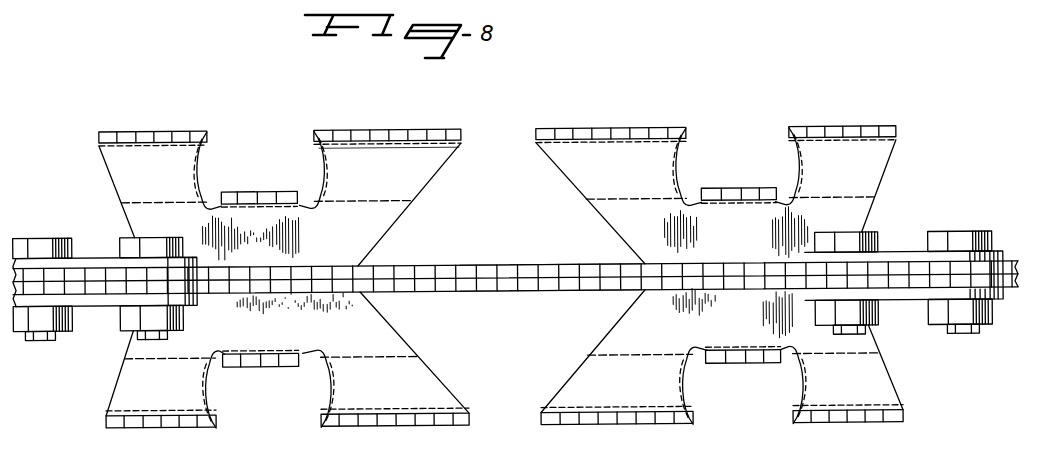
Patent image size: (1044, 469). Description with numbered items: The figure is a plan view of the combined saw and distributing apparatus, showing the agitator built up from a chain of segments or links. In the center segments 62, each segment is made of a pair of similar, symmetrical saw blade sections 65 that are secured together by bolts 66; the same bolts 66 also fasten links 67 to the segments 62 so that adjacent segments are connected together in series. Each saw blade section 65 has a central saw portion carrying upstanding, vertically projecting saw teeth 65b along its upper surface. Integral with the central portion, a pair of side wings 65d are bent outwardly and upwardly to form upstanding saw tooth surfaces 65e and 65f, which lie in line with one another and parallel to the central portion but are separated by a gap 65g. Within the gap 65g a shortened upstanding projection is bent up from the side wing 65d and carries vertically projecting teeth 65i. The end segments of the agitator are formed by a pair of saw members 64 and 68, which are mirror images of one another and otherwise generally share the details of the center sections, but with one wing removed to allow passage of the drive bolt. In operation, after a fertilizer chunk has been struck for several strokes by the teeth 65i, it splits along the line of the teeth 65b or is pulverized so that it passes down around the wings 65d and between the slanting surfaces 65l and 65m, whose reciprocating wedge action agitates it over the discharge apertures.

The center segment 62 is at (347, 158).
The saw member 64 is at (62, 285).
The saw blade section 65 is at (439, 266).
The upstanding saw teeth 65b is at (543, 265).
The side wing 65d is at (787, 220).
The saw tooth surface 65e is at (164, 134).
The saw tooth surface 65f is at (410, 130).
The gap 65g is at (303, 165).
The vertically projecting teeth 65i is at (262, 192).
The slanting surface 65l is at (390, 221).
The slanting surface 65m is at (561, 173).
The bolt 66 is at (152, 245).
The link 67 is at (112, 260).
The saw member 68 is at (40, 278).